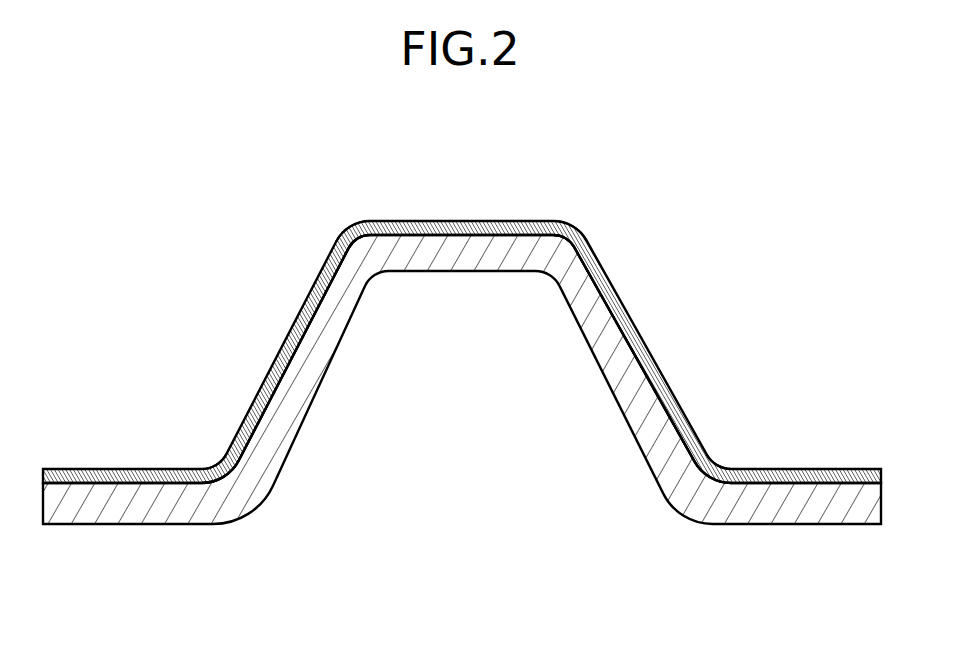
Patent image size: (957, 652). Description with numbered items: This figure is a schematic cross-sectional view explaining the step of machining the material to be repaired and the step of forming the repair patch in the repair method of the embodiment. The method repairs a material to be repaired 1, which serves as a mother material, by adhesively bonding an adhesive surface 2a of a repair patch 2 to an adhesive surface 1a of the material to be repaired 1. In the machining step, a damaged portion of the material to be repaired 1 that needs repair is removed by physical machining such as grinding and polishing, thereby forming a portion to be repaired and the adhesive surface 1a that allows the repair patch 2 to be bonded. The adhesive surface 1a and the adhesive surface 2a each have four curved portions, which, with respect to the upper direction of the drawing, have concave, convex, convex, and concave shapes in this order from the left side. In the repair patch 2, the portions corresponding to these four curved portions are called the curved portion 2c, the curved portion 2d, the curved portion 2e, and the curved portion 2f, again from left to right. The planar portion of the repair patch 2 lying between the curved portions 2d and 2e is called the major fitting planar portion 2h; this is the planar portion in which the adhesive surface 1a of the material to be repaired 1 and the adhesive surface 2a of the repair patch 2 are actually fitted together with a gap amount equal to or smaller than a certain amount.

The material to be repaired 1 is at (768, 524).
The adhesive surface of the material to be repaired 1a is at (469, 232).
The repair patch 2 is at (548, 221).
The adhesive surface of the repair patch 2a is at (507, 238).
The curved portion 2c is at (203, 468).
The curved portion 2d is at (349, 232).
The curved portion 2e is at (587, 237).
The curved portion 2f is at (713, 466).
The major fitting planar portion 2h is at (534, 159).